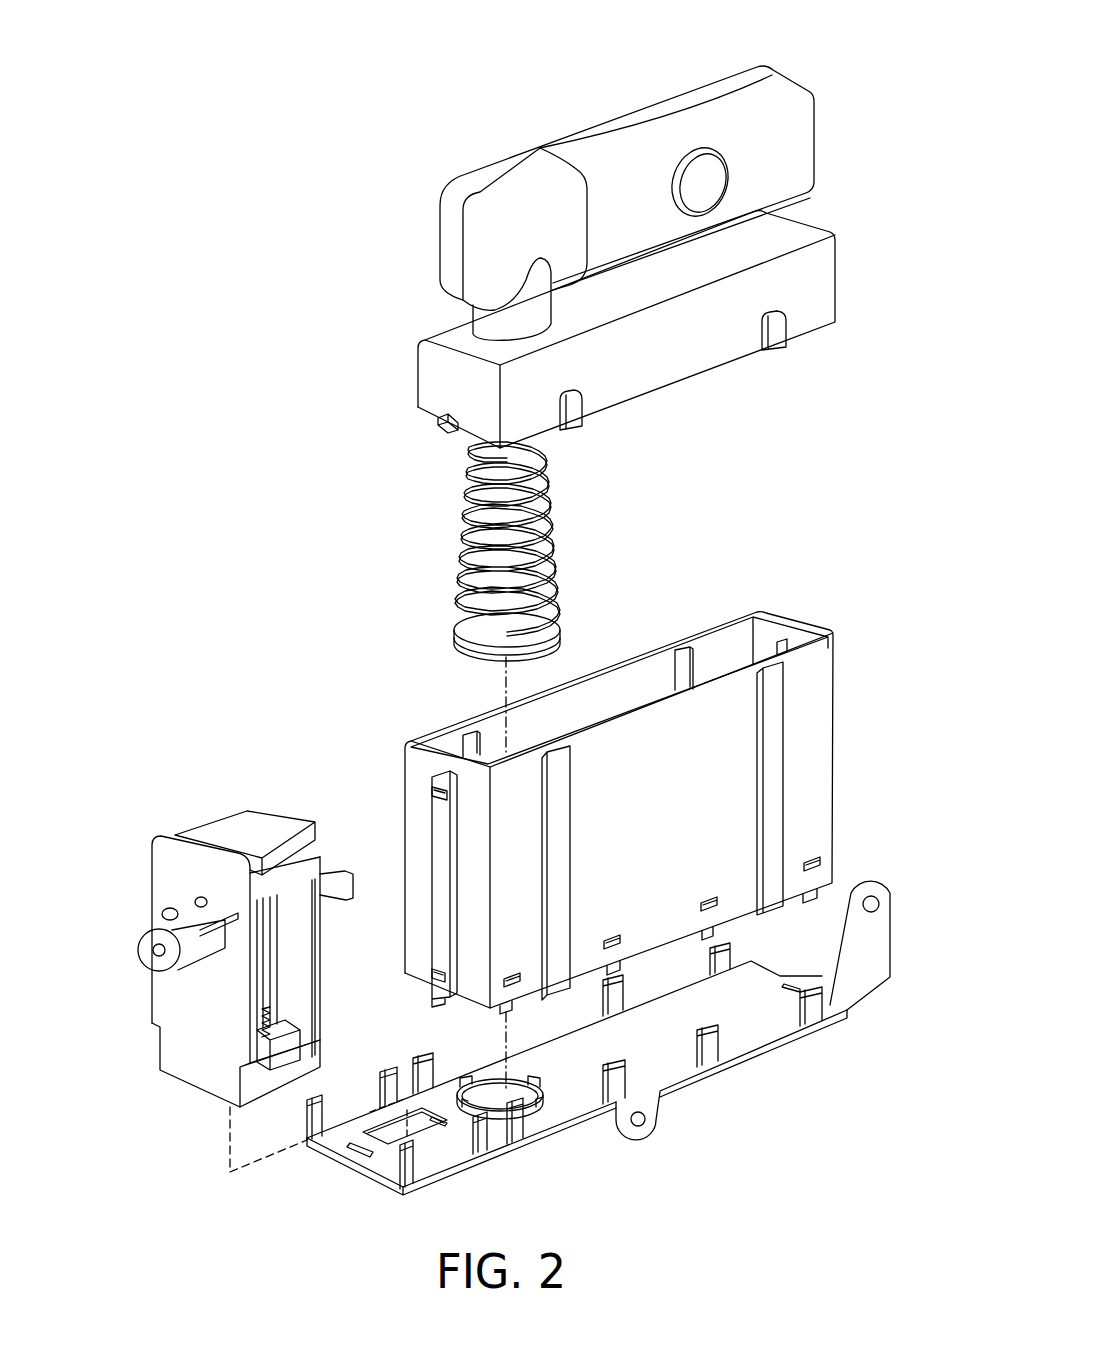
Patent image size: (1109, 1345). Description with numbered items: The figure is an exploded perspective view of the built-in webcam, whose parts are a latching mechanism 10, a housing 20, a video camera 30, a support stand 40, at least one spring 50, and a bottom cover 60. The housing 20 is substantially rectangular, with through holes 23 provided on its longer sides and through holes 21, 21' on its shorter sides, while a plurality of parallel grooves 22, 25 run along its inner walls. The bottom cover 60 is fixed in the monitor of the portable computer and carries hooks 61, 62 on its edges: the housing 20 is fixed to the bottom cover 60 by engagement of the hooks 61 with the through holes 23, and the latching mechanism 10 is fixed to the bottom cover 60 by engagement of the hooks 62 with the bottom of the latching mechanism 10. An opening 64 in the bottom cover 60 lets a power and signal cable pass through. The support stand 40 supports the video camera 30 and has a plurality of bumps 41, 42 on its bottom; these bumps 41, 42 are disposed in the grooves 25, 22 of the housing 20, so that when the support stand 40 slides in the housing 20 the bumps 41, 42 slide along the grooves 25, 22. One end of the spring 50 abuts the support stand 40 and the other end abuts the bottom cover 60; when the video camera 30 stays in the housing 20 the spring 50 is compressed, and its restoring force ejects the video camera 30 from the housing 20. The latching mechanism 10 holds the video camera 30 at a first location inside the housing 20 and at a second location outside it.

The latching mechanism 10 is at (138, 873).
The housing 20 is at (627, 780).
The through hole 21 is at (389, 888).
The through hole 21' is at (391, 974).
The groove 22 is at (683, 655).
The through hole 23 is at (822, 863).
The groove 25 is at (784, 641).
The video camera 30 is at (752, 56).
The support stand 40 is at (636, 344).
The bump 41 is at (438, 424).
The bump 42 is at (779, 336).
The spring 50 is at (560, 540).
The bottom cover 60 is at (598, 1059).
The hook 61 is at (712, 1052).
The hook 62 is at (480, 1127).
The opening 64 is at (545, 1099).